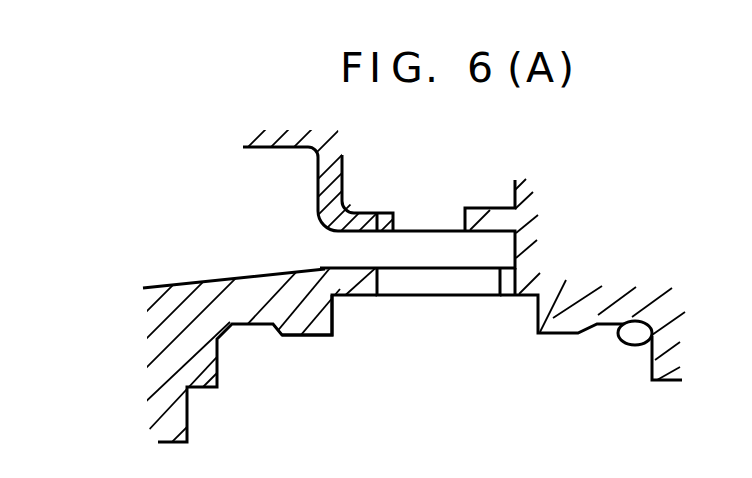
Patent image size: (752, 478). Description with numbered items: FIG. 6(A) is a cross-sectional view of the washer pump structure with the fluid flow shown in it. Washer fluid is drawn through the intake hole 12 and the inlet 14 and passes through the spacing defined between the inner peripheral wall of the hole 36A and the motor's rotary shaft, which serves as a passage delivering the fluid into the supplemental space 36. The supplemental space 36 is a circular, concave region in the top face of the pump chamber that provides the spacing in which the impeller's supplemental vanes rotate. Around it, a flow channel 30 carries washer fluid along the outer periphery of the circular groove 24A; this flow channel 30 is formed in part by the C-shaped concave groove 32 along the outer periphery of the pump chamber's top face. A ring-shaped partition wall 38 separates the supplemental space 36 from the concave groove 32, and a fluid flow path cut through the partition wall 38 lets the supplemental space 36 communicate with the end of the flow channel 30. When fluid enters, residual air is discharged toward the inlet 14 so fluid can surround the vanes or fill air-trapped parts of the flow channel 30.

The intake hole 12 is at (318, 254).
The inlet 14 is at (368, 240).
The flow channel 30 is at (237, 362).
The partition wall 38 is at (313, 336).
The supplemental space 36 is at (537, 293).
The hole 36A is at (378, 272).
The concave groove 32 is at (652, 338).
The circular groove 24A is at (646, 372).